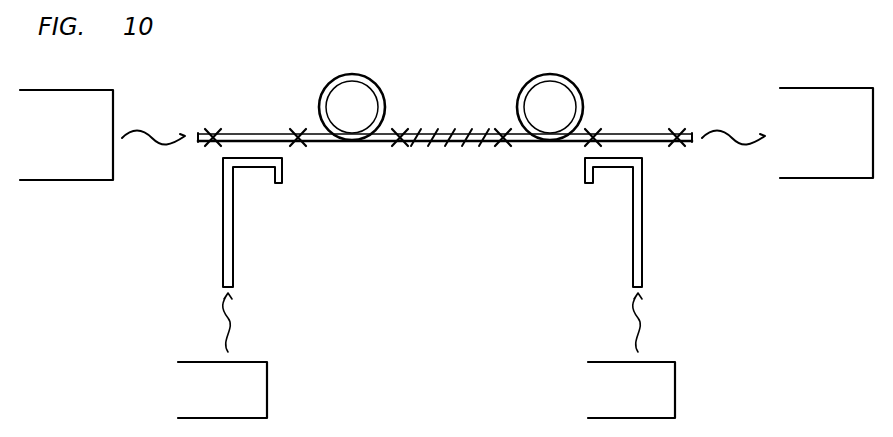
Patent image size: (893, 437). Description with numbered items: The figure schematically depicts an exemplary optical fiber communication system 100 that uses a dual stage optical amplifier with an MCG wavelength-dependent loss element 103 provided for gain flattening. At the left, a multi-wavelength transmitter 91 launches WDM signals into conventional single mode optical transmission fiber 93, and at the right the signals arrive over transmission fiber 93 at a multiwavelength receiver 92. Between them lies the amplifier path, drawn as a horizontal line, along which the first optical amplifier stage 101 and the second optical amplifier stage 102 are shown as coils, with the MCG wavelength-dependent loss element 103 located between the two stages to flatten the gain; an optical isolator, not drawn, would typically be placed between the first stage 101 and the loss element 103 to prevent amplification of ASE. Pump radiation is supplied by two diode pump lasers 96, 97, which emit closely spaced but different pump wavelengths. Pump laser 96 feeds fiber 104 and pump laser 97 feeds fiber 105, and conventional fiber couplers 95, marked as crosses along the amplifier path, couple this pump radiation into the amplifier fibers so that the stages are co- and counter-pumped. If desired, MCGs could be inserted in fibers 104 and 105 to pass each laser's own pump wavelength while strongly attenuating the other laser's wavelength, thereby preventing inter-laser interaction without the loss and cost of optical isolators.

The multi-wavelength transmitter 91 is at (60, 181).
The multiwavelength receiver 92 is at (818, 179).
The single mode optical transmission fiber 93 is at (207, 132).
The fiber couplers 95 is at (258, 133).
The diode pump laser 96 is at (268, 372).
The diode pump laser 97 is at (677, 372).
The optical fiber communication system 100 is at (232, 80).
The first optical amplifier stage 101 is at (320, 103).
The second optical amplifier stage 102 is at (518, 103).
The MCG wavelength-dependent loss element 103 is at (435, 147).
The fiber 104 is at (236, 226).
The fiber 105 is at (645, 226).